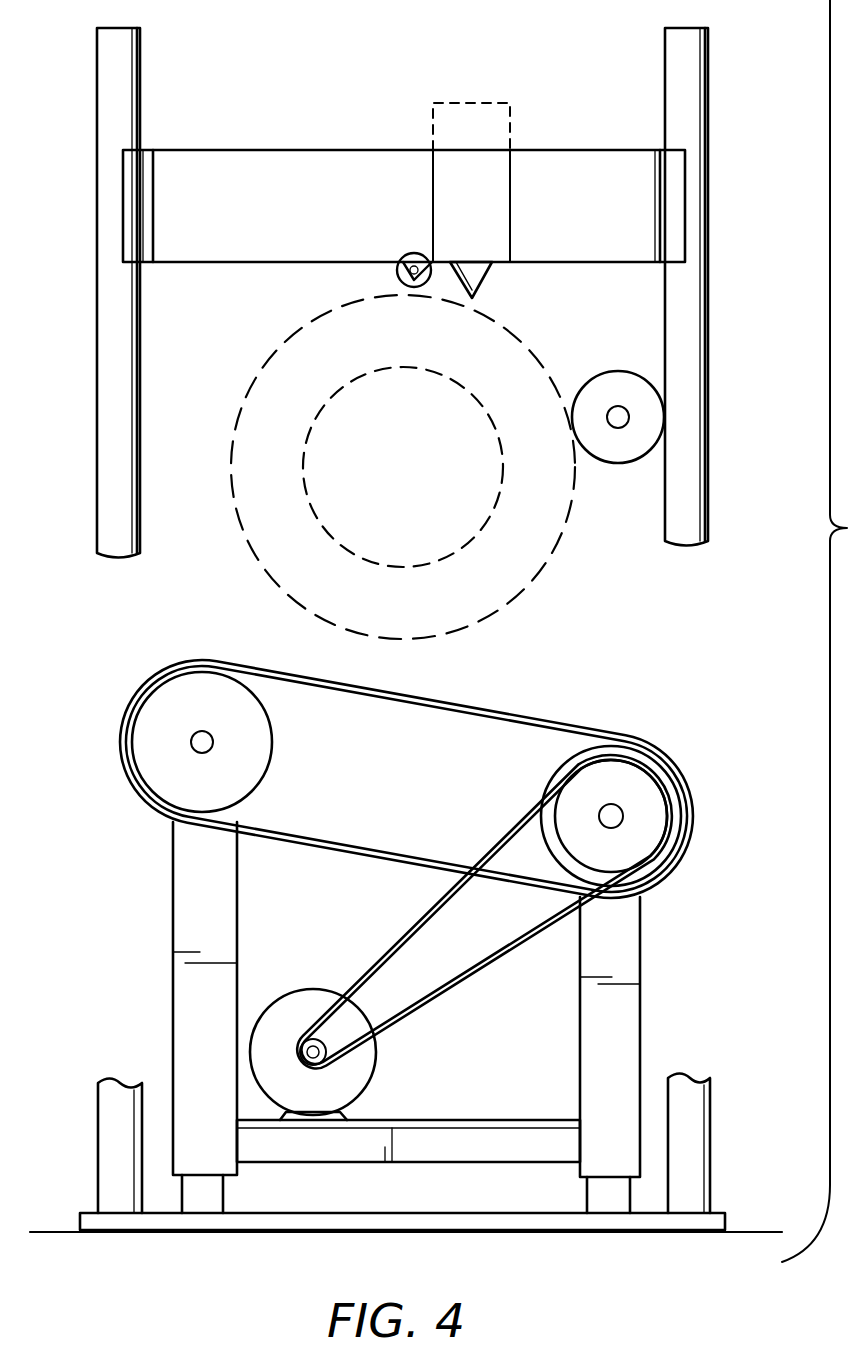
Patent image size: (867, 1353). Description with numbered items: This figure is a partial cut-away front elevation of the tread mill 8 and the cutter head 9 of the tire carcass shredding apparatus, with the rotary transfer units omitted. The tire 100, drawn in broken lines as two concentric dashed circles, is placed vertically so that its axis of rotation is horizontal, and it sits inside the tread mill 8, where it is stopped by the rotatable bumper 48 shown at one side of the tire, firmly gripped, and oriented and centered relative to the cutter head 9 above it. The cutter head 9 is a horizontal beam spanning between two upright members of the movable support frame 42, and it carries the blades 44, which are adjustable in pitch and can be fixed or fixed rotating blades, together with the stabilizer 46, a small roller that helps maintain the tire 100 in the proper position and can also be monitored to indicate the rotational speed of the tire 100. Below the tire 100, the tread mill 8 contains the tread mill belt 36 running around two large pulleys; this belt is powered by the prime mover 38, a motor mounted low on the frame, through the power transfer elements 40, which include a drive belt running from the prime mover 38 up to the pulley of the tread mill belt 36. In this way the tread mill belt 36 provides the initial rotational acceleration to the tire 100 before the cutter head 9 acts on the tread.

The tread mill 8 is at (641, 1005).
The cutter head 9 is at (288, 119).
The tread mill belt 36 is at (590, 728).
The prime mover 38 is at (378, 1050).
The power transfer elements 40 is at (638, 787).
The movable support frame 42 is at (141, 527).
The blades 44 is at (490, 265).
The stabilizer 46 is at (396, 267).
The rotatable bumper 48 is at (630, 340).
The tire 100 is at (576, 517).